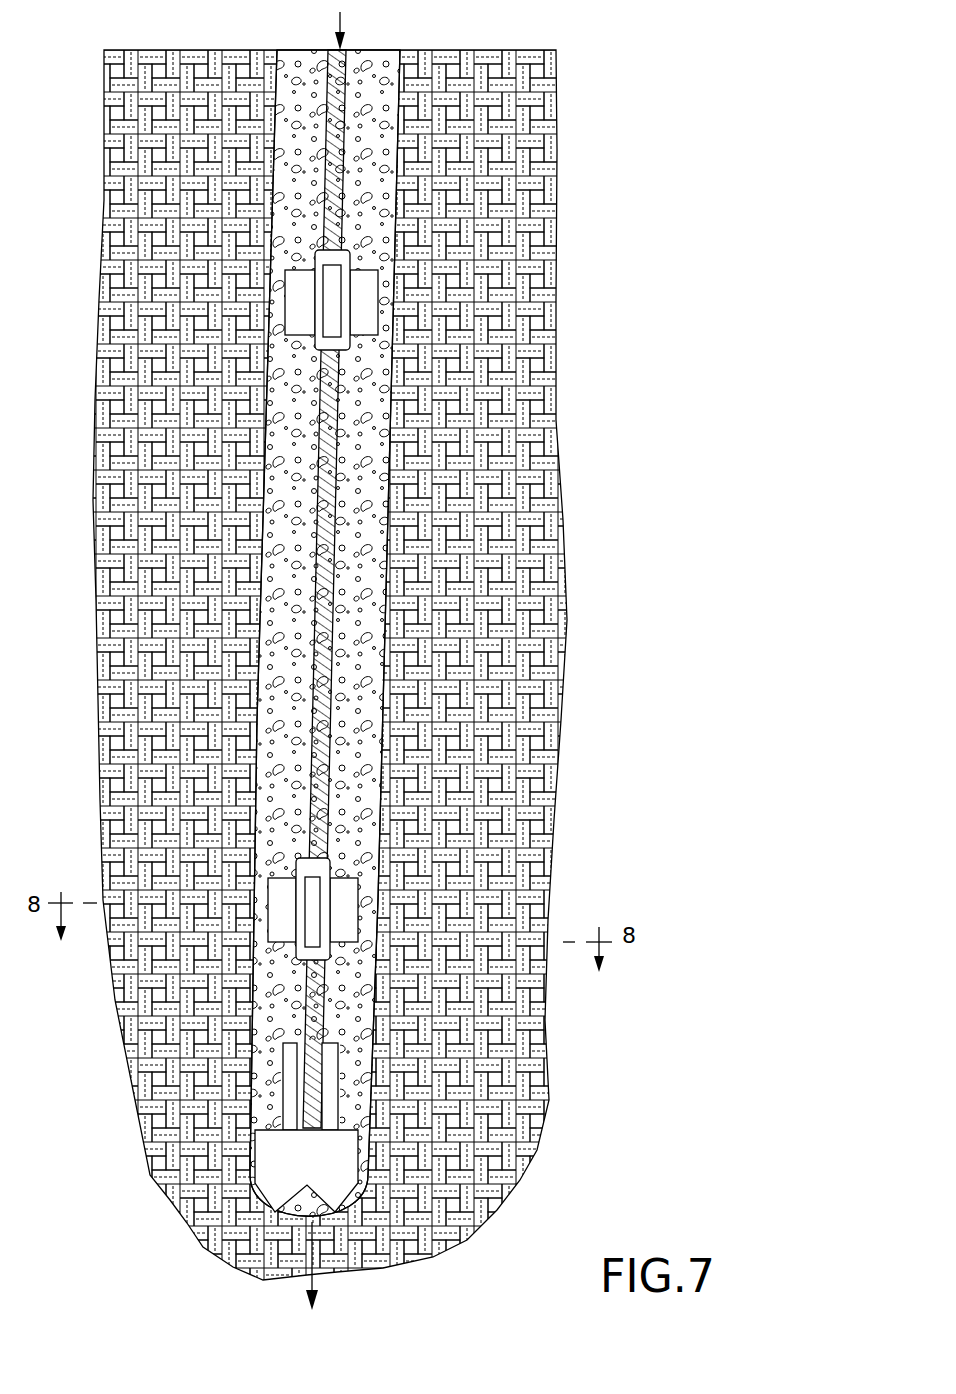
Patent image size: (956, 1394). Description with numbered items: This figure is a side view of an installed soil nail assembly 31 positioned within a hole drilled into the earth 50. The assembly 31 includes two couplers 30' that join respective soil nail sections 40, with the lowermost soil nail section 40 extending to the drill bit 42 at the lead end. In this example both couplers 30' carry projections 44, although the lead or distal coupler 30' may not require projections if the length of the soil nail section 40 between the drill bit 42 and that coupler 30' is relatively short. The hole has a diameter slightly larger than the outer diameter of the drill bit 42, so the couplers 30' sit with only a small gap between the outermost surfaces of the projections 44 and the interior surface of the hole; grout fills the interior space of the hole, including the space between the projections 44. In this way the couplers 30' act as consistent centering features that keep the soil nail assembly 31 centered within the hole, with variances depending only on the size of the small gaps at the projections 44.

The soil nail assembly 31 is at (605, 588).
The coupler 30' is at (276, 612).
The soil nail section 40 is at (333, 147).
The drill bit 42 is at (322, 1163).
The projections 44 is at (376, 318).
The earth 50 is at (492, 244).